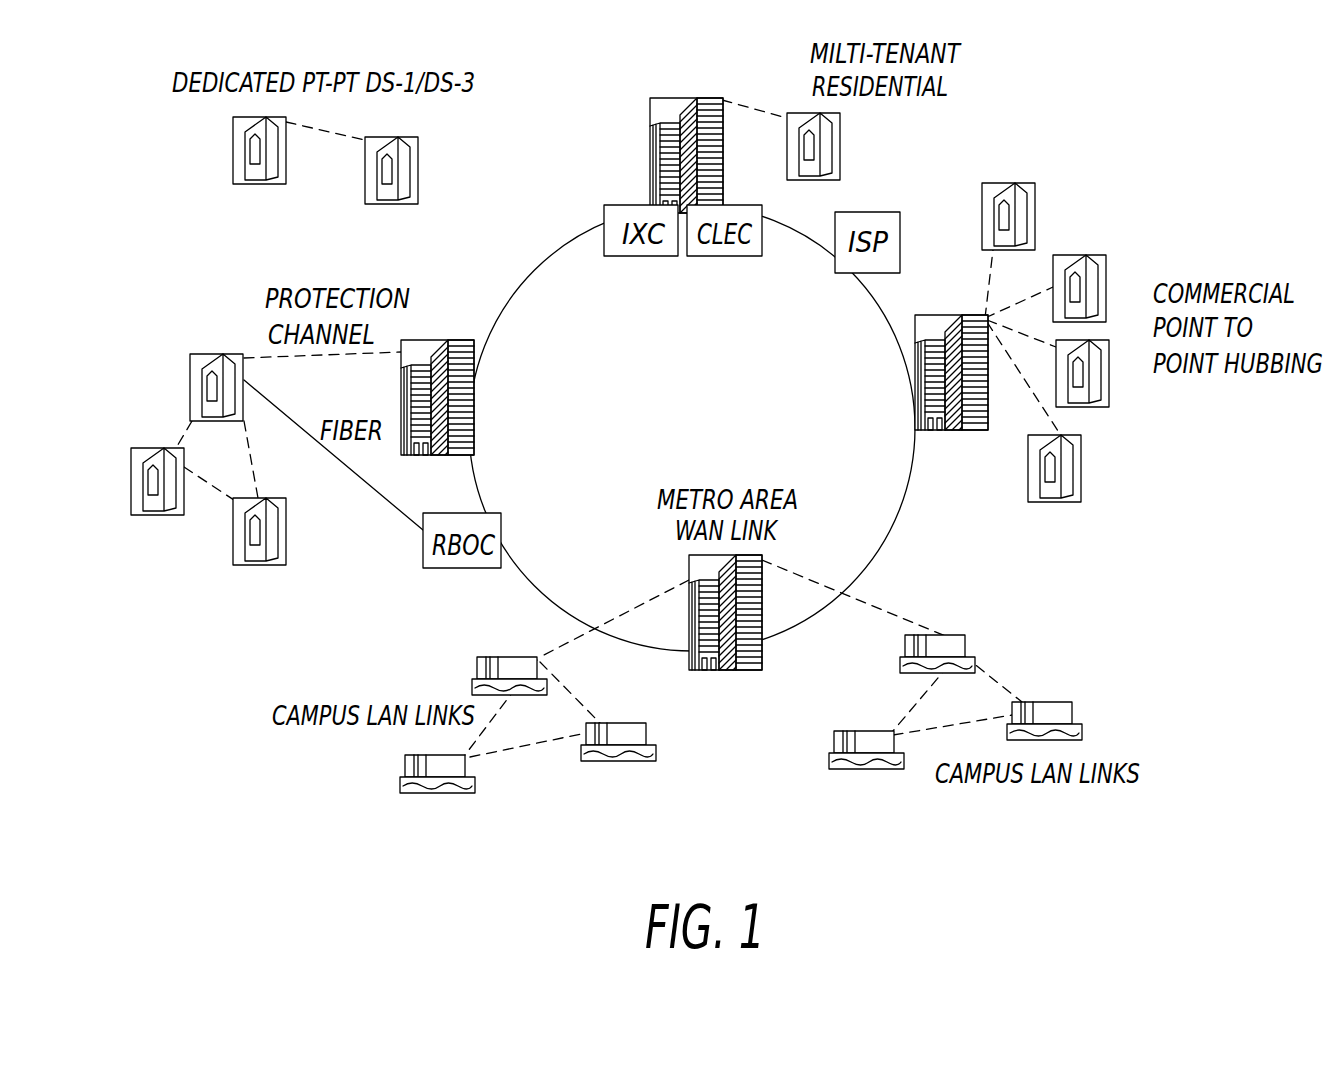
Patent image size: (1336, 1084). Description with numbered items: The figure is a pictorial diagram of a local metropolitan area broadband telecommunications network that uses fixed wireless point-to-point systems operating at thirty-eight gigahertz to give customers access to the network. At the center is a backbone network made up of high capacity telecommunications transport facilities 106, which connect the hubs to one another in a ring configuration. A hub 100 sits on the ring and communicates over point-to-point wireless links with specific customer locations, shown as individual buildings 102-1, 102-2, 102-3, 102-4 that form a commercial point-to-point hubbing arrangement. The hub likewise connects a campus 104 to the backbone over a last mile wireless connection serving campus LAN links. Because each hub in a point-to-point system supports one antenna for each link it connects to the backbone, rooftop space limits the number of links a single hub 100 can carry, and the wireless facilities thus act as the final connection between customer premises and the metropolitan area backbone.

The hub 100 is at (987, 432).
The building 102-1 is at (1080, 488).
The building 102-2 is at (1110, 398).
The building 102-3 is at (1105, 263).
The building 102-4 is at (1035, 192).
The campus 104 is at (963, 645).
The high capacity telecommunications transport facilities 106 is at (787, 633).